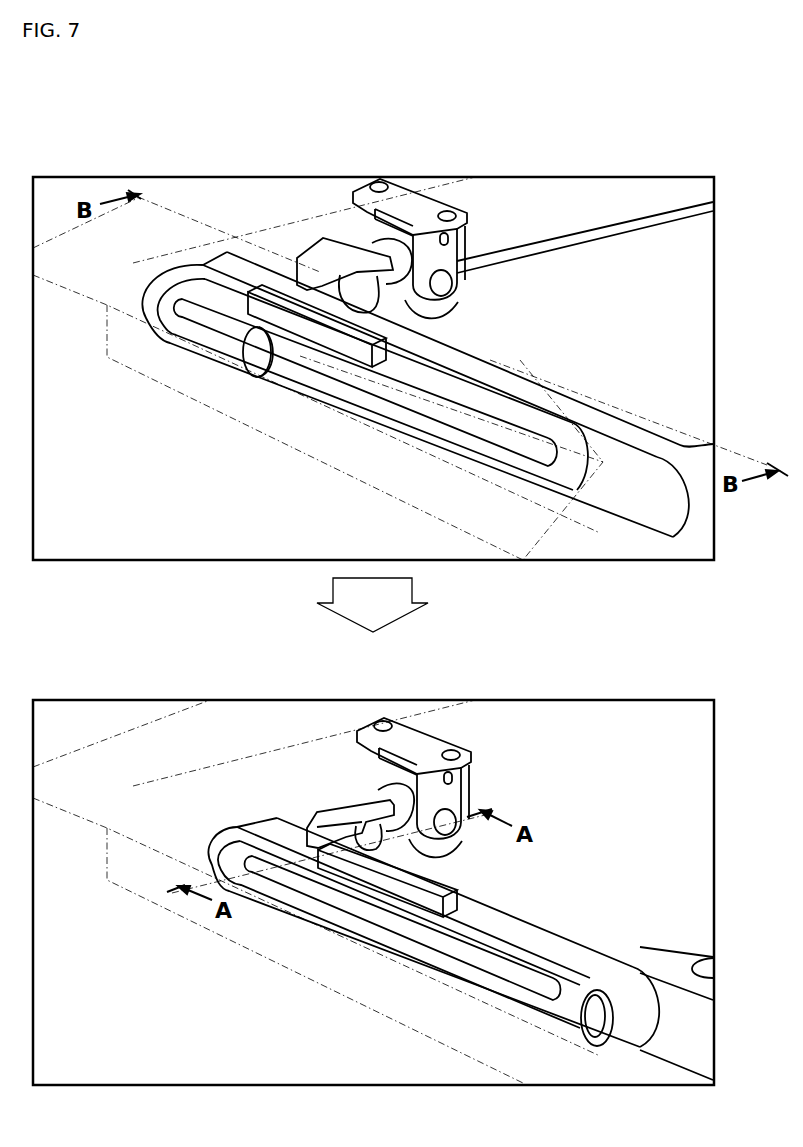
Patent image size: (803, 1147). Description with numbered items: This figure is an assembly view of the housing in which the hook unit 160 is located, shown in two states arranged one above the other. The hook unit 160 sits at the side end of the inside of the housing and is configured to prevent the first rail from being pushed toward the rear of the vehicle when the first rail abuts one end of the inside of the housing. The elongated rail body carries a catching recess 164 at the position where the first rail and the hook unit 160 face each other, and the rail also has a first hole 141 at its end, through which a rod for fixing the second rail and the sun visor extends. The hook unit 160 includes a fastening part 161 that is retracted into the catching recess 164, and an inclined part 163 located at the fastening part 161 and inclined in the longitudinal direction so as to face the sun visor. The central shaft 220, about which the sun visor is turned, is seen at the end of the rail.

The first hole 141 is at (363, 388).
The hook unit 160 is at (396, 184).
The fastening part 161 is at (343, 252).
The inclined part 163 is at (400, 318).
The catching recess 164 is at (228, 288).
The central shaft 220 is at (255, 362).